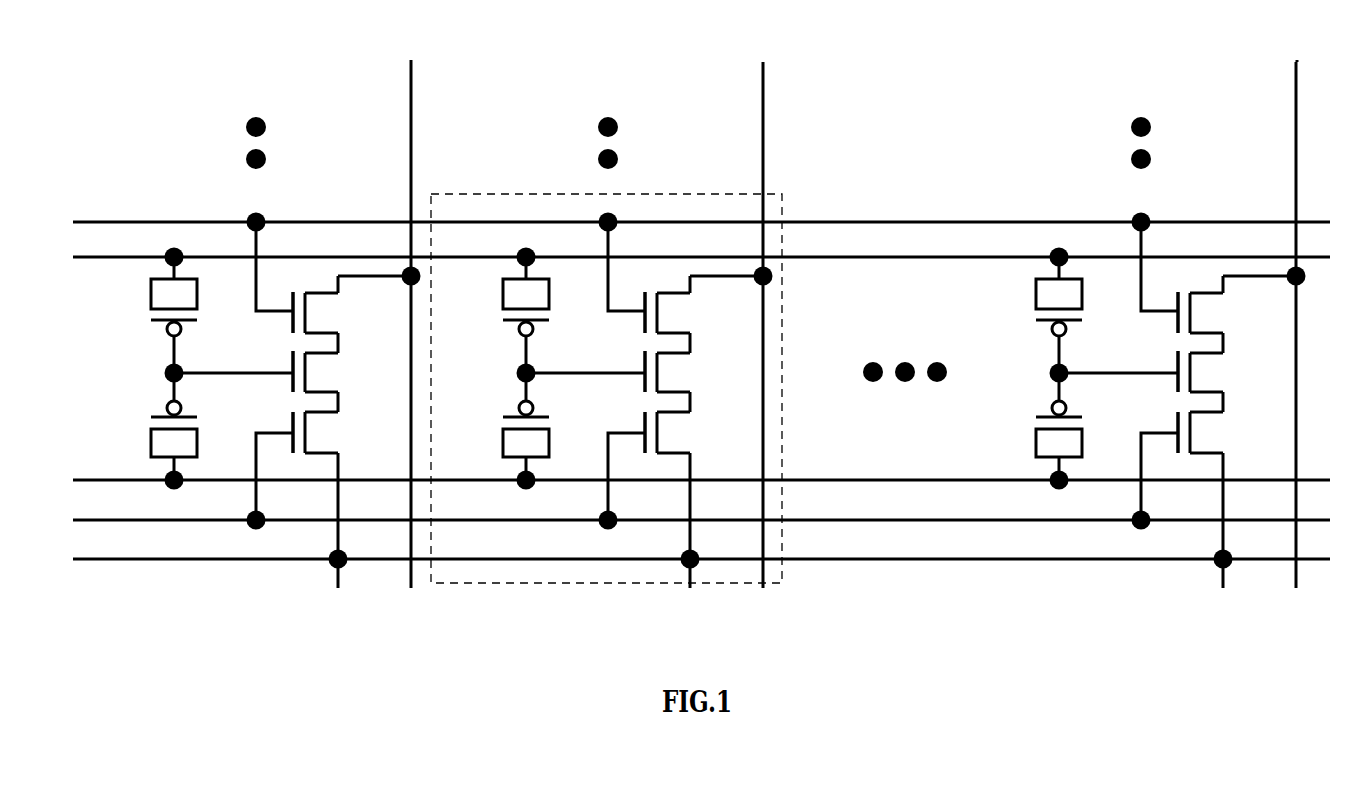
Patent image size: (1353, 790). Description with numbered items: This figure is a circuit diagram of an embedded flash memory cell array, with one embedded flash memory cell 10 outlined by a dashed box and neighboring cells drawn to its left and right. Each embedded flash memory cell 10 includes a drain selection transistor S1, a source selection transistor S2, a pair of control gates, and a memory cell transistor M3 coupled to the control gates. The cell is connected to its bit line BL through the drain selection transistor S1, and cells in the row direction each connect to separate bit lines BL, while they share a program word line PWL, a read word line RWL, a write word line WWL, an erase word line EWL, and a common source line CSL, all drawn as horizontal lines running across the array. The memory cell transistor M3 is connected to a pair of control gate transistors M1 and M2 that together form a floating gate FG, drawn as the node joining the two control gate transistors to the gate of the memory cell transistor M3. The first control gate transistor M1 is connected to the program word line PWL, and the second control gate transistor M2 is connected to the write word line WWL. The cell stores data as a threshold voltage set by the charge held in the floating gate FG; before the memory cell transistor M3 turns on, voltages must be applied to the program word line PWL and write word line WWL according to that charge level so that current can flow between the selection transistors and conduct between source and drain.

The embedded flash memory cell 10 is at (487, 193).
The first control gate transistor M1 is at (499, 306).
The second control gate transistor M2 is at (499, 436).
The memory cell transistor M3 is at (689, 372).
The drain selection transistor S1 is at (670, 282).
The source selection transistor S2 is at (665, 495).
The floating gate FG is at (581, 357).
The bit line BL is at (688, 308).
The read word line RWL is at (701, 204).
The program word line PWL is at (701, 238).
The write word line WWL is at (701, 462).
The erase word line EWL is at (701, 502).
The common source line CSL is at (701, 540).